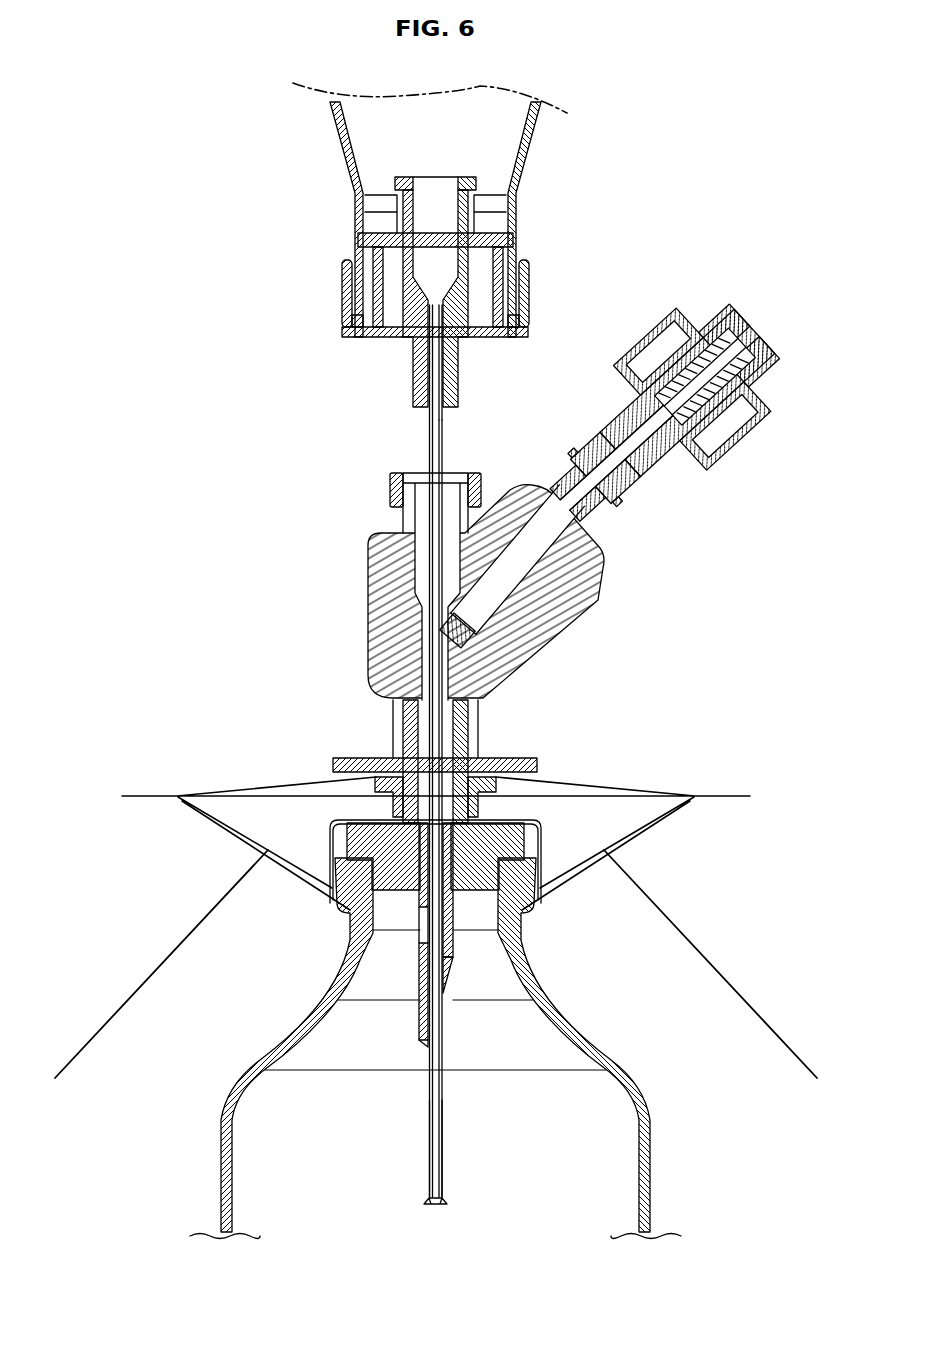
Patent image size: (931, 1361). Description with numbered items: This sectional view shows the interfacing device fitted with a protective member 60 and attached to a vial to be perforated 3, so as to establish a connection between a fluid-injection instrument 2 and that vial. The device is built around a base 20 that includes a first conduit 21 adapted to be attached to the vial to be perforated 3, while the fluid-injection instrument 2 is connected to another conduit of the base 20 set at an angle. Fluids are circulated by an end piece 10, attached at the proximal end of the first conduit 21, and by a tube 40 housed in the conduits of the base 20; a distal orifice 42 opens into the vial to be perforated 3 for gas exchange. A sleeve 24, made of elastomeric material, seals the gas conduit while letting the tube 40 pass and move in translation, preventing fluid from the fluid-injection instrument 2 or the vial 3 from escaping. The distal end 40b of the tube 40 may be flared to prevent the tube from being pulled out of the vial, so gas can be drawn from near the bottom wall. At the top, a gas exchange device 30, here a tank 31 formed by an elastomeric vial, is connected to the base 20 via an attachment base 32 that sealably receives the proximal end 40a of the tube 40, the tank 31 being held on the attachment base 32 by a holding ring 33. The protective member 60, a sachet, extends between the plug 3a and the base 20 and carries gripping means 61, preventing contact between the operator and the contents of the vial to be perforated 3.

The fluid-injection instrument 2 is at (728, 506).
The vial to be perforated 3 is at (652, 1162).
The plug 3a is at (478, 847).
The end piece 10 is at (400, 759).
The base 20 is at (412, 586).
The first conduit 21 is at (462, 781).
The sleeve 24 is at (420, 531).
The gas exchange device 30 is at (397, 251).
The tank 31 is at (525, 137).
The attachment base 32 is at (457, 366).
The holding ring 33 is at (344, 275).
The tube 40 is at (436, 832).
The proximal end of the tube 40a is at (434, 318).
The distal end of the tube 40b is at (443, 1181).
The distal orifice 42 is at (434, 1212).
The protective member 60 is at (436, 897).
The gripping means 61 is at (693, 954).